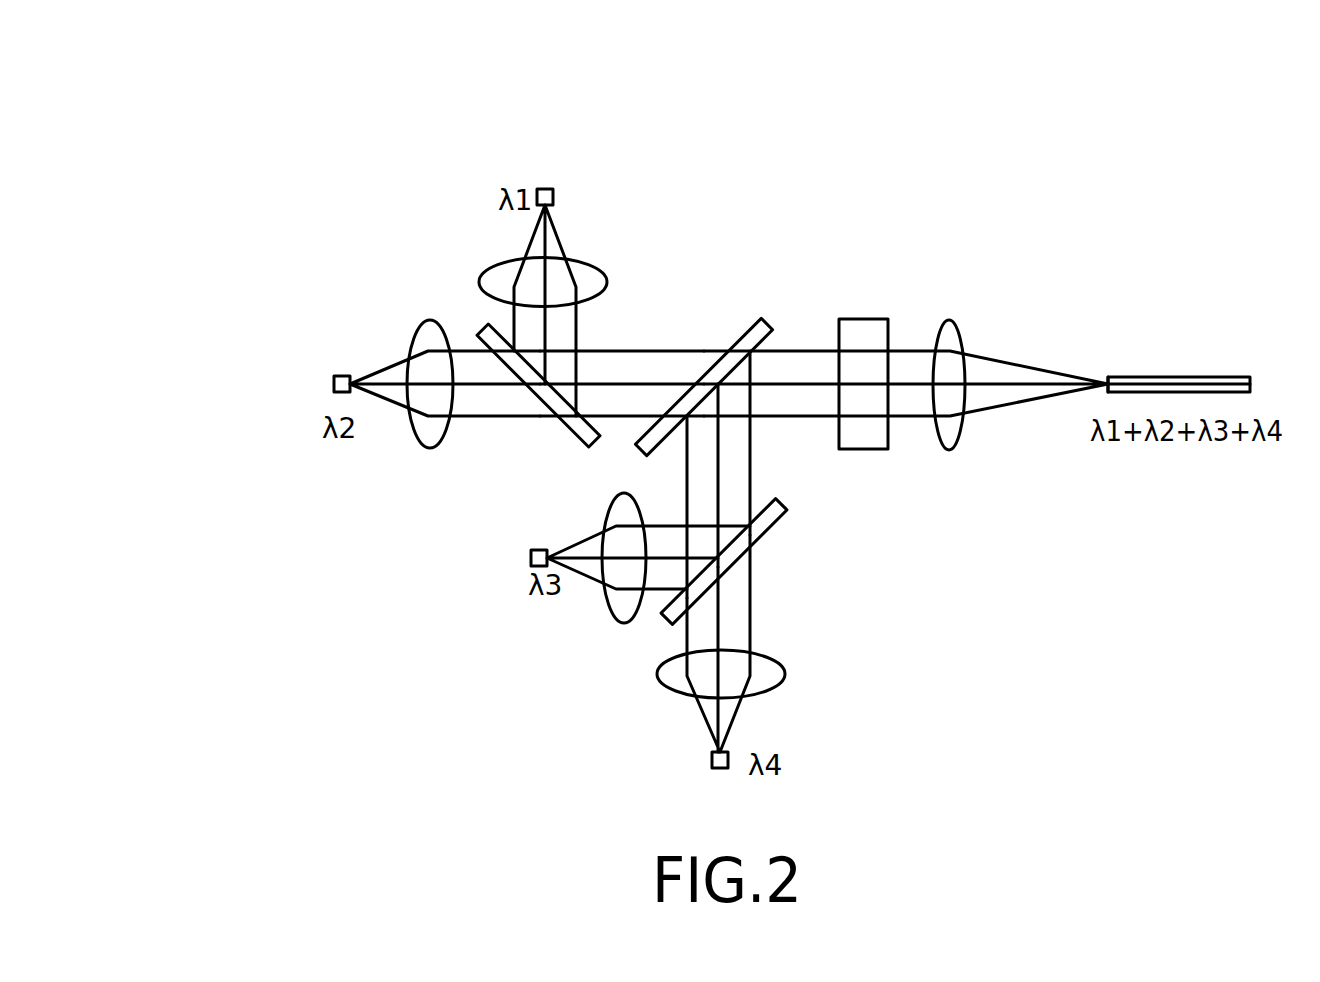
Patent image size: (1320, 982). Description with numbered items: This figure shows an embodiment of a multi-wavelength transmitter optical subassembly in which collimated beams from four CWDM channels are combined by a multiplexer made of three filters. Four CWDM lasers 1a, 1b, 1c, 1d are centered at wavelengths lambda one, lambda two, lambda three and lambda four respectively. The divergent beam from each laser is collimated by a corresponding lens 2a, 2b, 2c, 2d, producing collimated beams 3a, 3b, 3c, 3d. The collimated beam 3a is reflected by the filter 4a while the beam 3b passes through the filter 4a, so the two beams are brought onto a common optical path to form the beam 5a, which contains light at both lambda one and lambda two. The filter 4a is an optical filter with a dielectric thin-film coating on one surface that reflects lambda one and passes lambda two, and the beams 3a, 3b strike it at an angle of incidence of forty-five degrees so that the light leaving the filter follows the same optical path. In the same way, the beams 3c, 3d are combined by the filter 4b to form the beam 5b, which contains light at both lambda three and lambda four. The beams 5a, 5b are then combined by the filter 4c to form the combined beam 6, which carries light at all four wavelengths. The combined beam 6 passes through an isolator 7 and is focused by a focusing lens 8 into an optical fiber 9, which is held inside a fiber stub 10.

The CWDM laser 1a is at (540, 189).
The CWDM laser 1b is at (333, 383).
The CWDM laser 1c is at (530, 558).
The CWDM laser 1d is at (712, 760).
The collimating lens 2a is at (496, 268).
The collimating lens 2b is at (428, 323).
The collimating lens 2c is at (600, 587).
The collimating lens 2d is at (657, 668).
The collimated beam 3a is at (577, 319).
The collimated beam 3b is at (495, 418).
The collimated beam 3c is at (667, 526).
The collimated beam 3d is at (757, 630).
The filter 4a is at (587, 442).
The filter 4b is at (775, 520).
The filter 4c is at (747, 327).
The beam 5a is at (650, 349).
The beam 5b is at (751, 462).
The combined beam 6 is at (803, 351).
The isolator 7 is at (857, 319).
The focusing lens 8 is at (950, 333).
The optical fiber 9 is at (1108, 377).
The fiber stub 10 is at (1200, 377).